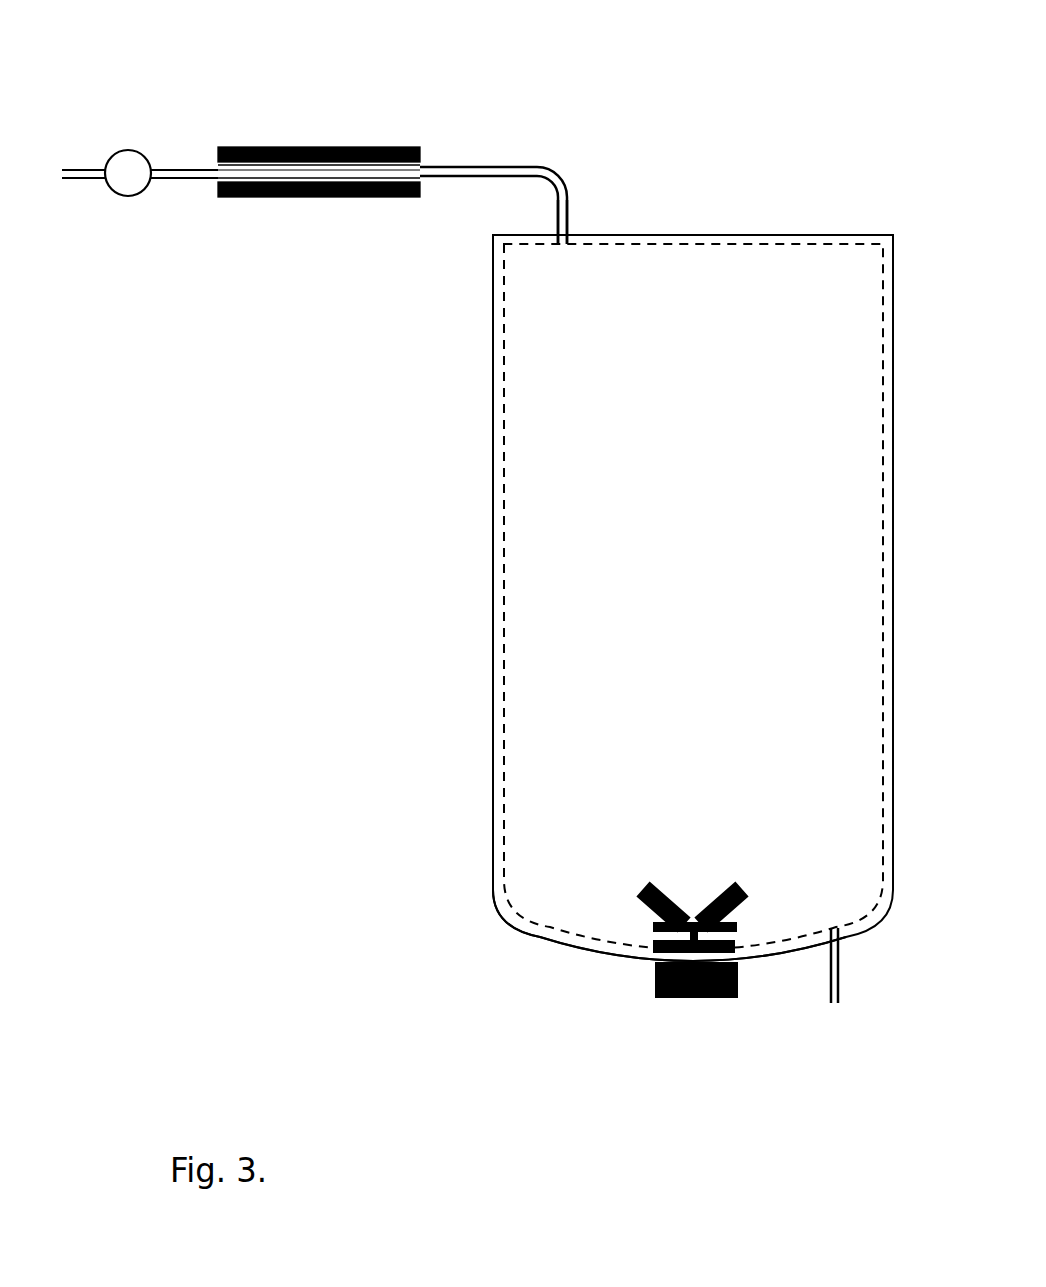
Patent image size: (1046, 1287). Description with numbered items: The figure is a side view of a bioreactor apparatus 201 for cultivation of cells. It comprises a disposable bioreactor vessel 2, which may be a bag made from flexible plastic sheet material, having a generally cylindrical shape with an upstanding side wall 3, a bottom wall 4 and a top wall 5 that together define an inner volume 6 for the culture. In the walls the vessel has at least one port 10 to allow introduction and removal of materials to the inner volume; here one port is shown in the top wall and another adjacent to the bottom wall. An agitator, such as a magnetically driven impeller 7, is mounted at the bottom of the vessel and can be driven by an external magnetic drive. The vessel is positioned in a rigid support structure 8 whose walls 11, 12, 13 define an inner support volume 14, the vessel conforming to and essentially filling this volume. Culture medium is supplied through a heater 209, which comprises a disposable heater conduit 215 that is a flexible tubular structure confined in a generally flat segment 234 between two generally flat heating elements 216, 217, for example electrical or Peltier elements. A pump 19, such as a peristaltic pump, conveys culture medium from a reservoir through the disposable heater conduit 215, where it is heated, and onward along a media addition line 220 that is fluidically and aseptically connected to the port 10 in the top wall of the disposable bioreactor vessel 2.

The disposable bioreactor vessel 2 is at (640, 584).
The side wall 3 is at (502, 792).
The bottom wall 4 is at (555, 932).
The top wall 5 is at (693, 242).
The inner volume 6 is at (693, 560).
The impeller 7 is at (693, 922).
The rigid support structure 8 is at (493, 587).
The port 10 is at (565, 222).
The wall of the rigid support structure 11 is at (493, 463).
The wall of the rigid support structure 12 is at (595, 957).
The wall of the rigid support structure 13 is at (818, 235).
The inner support volume 14 is at (693, 700).
The pump 19 is at (113, 192).
The bioreactor apparatus 201 is at (220, 596).
The heater 209 is at (373, 140).
The disposable heater conduit 215 is at (387, 173).
The heating element 216 is at (373, 147).
The heating element 217 is at (318, 197).
The media addition line 220 is at (530, 170).
The segment of the disposable heater conduit 234 is at (317, 177).